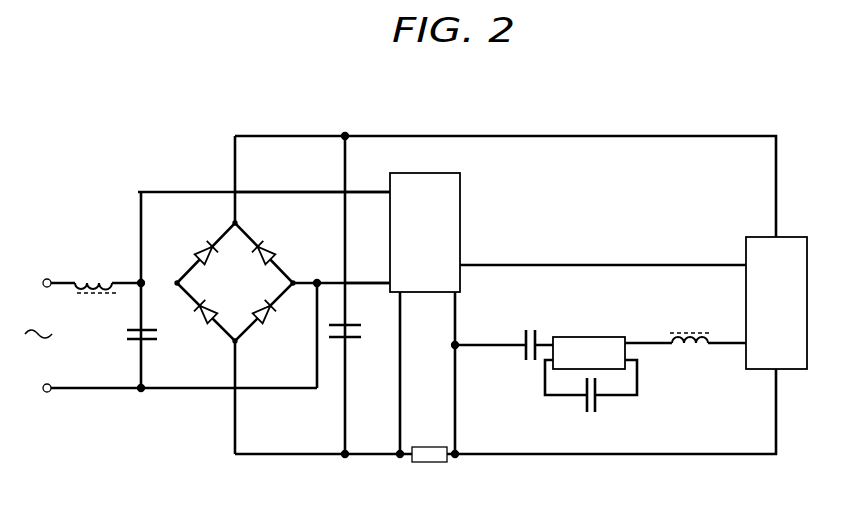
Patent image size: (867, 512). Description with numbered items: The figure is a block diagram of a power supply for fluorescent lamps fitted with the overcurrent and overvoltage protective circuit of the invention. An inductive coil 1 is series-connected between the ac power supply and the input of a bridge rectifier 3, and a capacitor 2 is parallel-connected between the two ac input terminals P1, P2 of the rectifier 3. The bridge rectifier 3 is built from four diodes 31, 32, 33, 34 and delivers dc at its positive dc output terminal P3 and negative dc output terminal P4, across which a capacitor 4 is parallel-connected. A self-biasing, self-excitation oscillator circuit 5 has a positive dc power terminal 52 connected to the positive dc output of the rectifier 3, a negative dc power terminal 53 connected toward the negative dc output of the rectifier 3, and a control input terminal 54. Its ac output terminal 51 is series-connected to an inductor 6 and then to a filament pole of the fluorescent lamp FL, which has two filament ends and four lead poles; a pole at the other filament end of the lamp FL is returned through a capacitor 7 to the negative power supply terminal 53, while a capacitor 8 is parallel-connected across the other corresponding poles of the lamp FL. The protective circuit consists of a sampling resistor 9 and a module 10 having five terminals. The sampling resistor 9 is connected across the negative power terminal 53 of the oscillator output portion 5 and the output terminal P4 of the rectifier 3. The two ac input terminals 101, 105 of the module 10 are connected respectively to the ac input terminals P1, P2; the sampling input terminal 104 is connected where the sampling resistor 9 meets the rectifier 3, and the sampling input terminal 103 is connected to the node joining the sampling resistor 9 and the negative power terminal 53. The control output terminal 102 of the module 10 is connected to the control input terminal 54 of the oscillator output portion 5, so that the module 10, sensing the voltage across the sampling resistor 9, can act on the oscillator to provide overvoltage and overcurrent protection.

The inductive coil 1 is at (102, 284).
The capacitor 2 is at (126, 342).
The bridge rectifier 3 is at (243, 295).
The diode 31 is at (196, 244).
The diode 32 is at (287, 244).
The diode 33 is at (273, 318).
The diode 34 is at (197, 318).
The capacitor 4 is at (355, 338).
The self-biasing, self-excitation oscillator circuit 5 is at (776, 303).
The ac output terminal 51 is at (726, 349).
The positive dc power terminal 52 is at (777, 214).
The negative dc power terminal 53 is at (779, 395).
The control input terminal 54 is at (722, 262).
The inductor 6 is at (692, 332).
The capacitor 7 is at (529, 332).
The capacitor 8 is at (596, 400).
The sampling resistor 9 is at (425, 448).
The module 10 is at (425, 315).
The ac input terminal 101 is at (368, 191).
The control output terminal 102 is at (497, 263).
The sampling input terminal 103 is at (456, 328).
The sampling input terminal 104 is at (400, 300).
The ac input terminal 105 is at (367, 281).
The ac input terminal P1 is at (177, 282).
The ac input terminal P2 is at (296, 280).
The positive dc output terminal P3 is at (236, 223).
The negative dc output terminal P4 is at (238, 345).
The fluorescent lamp FL is at (586, 334).